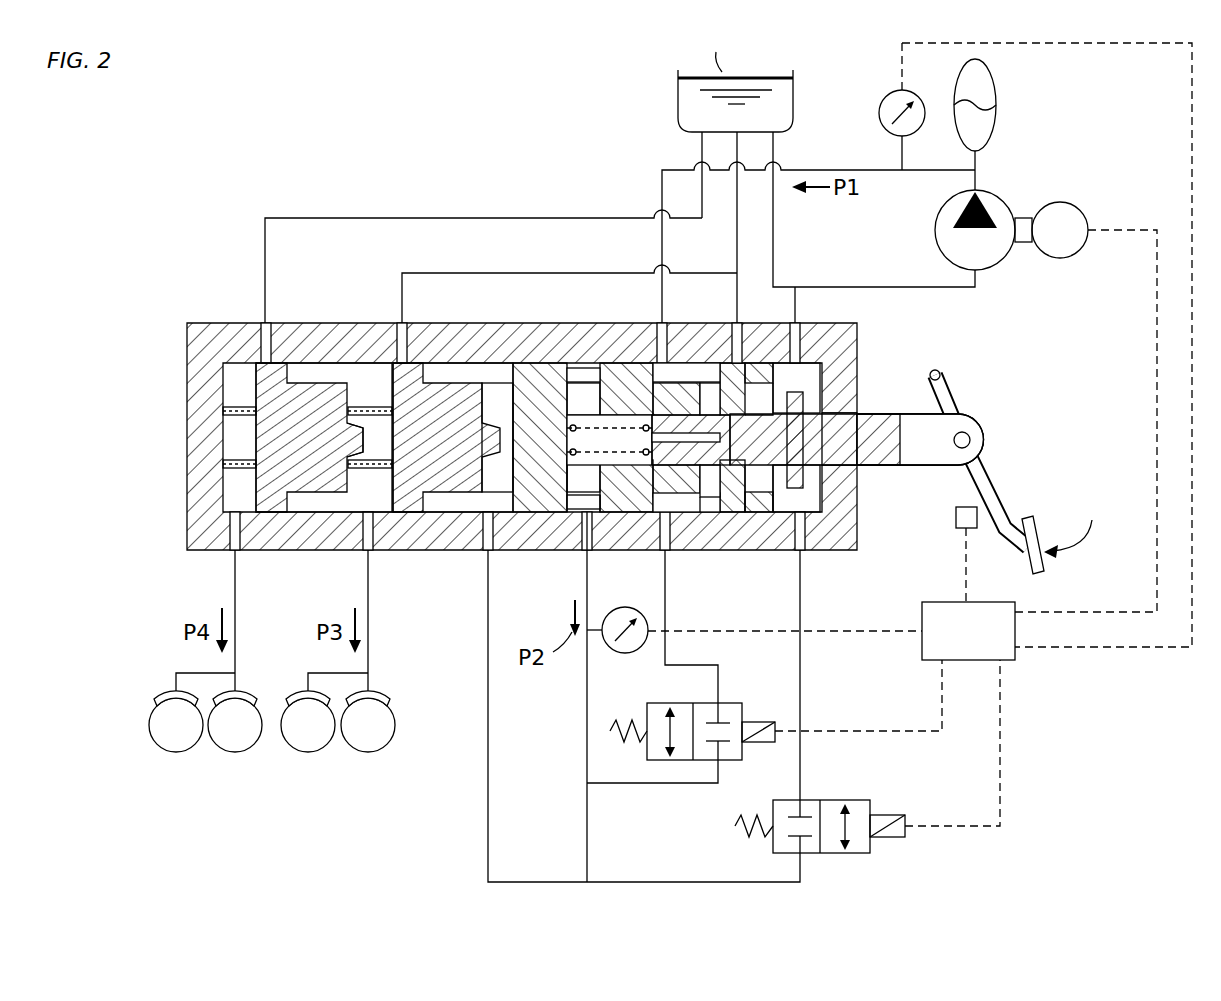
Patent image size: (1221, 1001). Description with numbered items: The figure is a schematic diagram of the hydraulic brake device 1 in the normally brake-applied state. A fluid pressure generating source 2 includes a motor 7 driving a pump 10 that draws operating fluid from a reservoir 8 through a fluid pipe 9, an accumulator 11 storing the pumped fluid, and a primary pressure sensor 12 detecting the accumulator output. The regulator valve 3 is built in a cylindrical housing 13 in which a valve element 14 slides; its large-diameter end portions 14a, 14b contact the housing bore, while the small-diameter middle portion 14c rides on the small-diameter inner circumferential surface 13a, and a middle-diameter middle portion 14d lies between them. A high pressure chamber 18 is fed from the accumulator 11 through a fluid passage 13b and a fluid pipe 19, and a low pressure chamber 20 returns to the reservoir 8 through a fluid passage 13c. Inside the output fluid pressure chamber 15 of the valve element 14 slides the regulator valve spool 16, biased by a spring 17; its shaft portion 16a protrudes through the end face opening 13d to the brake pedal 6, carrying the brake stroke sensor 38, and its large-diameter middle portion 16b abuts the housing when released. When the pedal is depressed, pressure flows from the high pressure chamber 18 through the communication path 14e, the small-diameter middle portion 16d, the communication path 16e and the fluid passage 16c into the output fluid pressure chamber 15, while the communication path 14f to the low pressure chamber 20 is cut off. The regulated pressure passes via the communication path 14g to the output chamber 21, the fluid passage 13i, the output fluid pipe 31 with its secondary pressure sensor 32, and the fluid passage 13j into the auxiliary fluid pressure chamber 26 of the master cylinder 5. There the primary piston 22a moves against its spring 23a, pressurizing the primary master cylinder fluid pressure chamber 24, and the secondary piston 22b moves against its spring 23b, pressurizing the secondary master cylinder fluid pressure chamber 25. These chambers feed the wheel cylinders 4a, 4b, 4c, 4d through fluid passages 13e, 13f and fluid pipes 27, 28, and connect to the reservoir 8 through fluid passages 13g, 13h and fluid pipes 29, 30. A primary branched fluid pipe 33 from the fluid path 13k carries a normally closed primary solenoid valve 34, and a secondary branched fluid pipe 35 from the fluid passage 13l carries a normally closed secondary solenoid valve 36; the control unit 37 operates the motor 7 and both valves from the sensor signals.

The hydraulic brake device 1 is at (410, 142).
The fluid pressure generating source 2 is at (853, 88).
The regulator valve 3 is at (793, 389).
The wheel cylinder 4a is at (366, 752).
The wheel cylinder 4b is at (306, 752).
The wheel cylinder 4c is at (233, 752).
The wheel cylinder 4d is at (174, 752).
The master cylinder 5 is at (190, 318).
The brake pedal 6 is at (1042, 526).
The motor 7 is at (1078, 207).
The reservoir 8 is at (678, 102).
The fluid pipe 9 is at (775, 228).
The pump 10 is at (1003, 203).
The accumulator 11 is at (996, 96).
The primary pressure sensor 12 is at (879, 116).
The housing 13 is at (302, 340).
The small-diameter inner circumferential surface 13a is at (620, 505).
The fluid passage 13b is at (660, 340).
The fluid passage 13c is at (798, 340).
The end face opening 13d is at (862, 398).
The fluid passage 13e is at (366, 542).
The fluid passage 13f is at (233, 542).
The fluid passage 13g is at (400, 340).
The fluid passage 13h is at (263, 340).
The fluid passage 13i is at (585, 542).
The fluid passage 13j is at (486, 542).
The fluid path 13k is at (663, 542).
The fluid passage 13l is at (800, 542).
The valve element 14 is at (520, 372).
The large-diameter end portion 14a is at (700, 510).
The large-diameter end portion 14b is at (545, 508).
The small-diameter middle portion 14c is at (700, 500).
The middle-diameter middle portion 14d is at (580, 375).
The communication path 14e is at (720, 378).
The communication path 14f is at (805, 492).
The communication path 14g is at (565, 510).
The output fluid pressure chamber 15 is at (617, 430).
The regulator valve spool 16 is at (838, 468).
The shaft portion 16a is at (968, 428).
The large-diameter middle portion 16b is at (804, 482).
The fluid passage 16c is at (703, 393).
The small-diameter middle portion 16d is at (770, 495).
The communication path 16e is at (745, 495).
The spring 17 is at (595, 425).
The high pressure chamber 18 is at (740, 395).
The fluid pipe 19 is at (660, 192).
The low pressure chamber 20 is at (845, 345).
The output chamber 21 is at (602, 508).
The primary piston 22a is at (440, 482).
The secondary piston 22b is at (300, 492).
The spring 23a is at (410, 492).
The spring 23b is at (235, 470).
The primary master cylinder fluid pressure chamber 24 is at (372, 378).
The secondary master cylinder fluid pressure chamber 25 is at (235, 392).
The auxiliary fluid pressure chamber 26 is at (472, 378).
The fluid pipe 27 is at (370, 636).
The fluid pipe 28 is at (240, 636).
The fluid pipe 29 is at (498, 273).
The fluid pipe 30 is at (338, 218).
The output fluid pipe 31 is at (585, 717).
The secondary pressure sensor 32 is at (635, 655).
The primary branched fluid pipe 33 is at (722, 682).
The primary solenoid valve 34 is at (722, 765).
The secondary branched fluid pipe 35 is at (802, 682).
The secondary solenoid valve 36 is at (850, 804).
The control unit (ECU) 37 is at (1018, 606).
The brake stroke sensor 38 is at (958, 522).